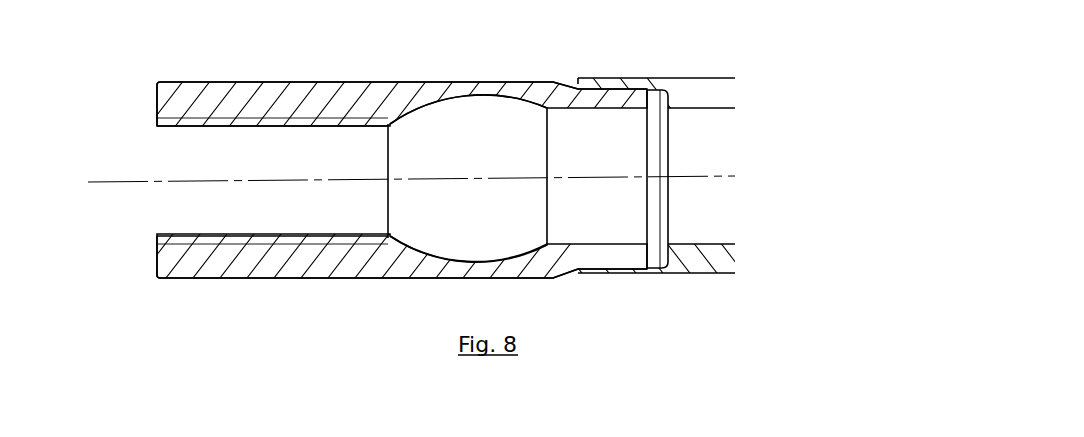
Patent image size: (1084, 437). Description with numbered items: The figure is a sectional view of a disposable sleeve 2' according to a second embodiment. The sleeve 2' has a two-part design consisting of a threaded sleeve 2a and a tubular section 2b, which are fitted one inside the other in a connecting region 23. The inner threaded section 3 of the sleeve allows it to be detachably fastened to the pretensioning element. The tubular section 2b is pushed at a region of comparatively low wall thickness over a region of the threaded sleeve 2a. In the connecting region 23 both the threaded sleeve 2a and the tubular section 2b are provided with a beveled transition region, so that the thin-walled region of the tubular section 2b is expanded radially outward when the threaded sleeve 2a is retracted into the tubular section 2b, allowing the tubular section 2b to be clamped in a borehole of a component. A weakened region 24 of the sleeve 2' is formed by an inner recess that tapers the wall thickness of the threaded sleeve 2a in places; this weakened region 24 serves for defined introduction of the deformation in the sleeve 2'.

The sleeve 2' is at (411, 221).
The threaded sleeve 2a is at (273, 98).
The tubular section 2b is at (732, 91).
The inner threaded section 3 is at (188, 243).
The connecting region 23 is at (603, 66).
The weakened region 24 is at (476, 72).